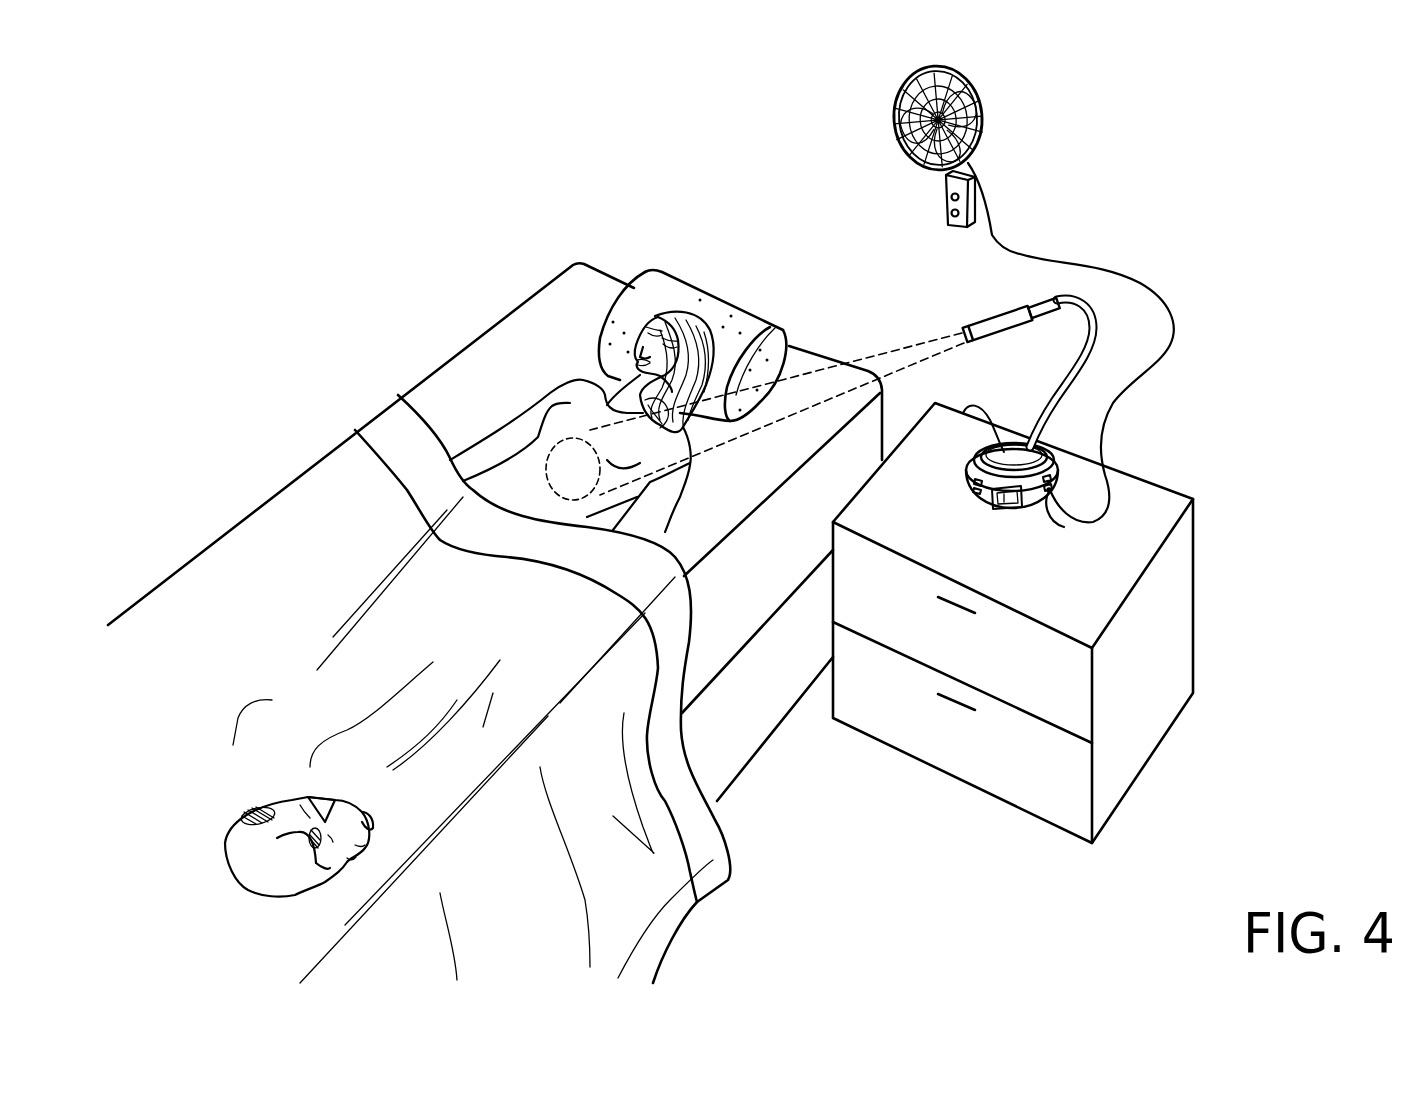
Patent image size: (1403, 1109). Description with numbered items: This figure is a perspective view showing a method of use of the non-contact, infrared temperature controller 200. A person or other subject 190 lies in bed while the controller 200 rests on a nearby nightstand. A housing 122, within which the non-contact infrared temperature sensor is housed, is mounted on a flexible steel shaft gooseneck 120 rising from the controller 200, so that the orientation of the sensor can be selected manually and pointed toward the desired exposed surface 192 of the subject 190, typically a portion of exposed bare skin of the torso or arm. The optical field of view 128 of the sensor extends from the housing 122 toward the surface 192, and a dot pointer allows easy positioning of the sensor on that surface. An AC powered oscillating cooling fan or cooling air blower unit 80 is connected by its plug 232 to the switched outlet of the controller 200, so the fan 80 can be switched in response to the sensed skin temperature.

The cooling fan 80 is at (996, 107).
The flexible steel shaft gooseneck 120 is at (1060, 383).
The housing 122 is at (993, 317).
The optical field of view 128 is at (548, 480).
The object 190 is at (703, 312).
The exposed surface 192 is at (577, 457).
The non-contact, infrared temperature controller 200 is at (968, 511).
The plug 232 is at (1042, 495).